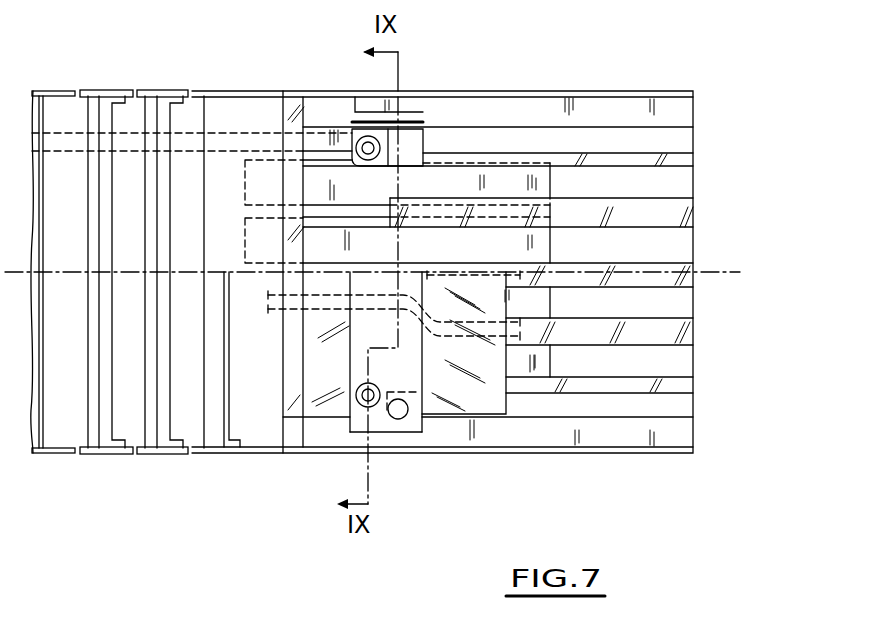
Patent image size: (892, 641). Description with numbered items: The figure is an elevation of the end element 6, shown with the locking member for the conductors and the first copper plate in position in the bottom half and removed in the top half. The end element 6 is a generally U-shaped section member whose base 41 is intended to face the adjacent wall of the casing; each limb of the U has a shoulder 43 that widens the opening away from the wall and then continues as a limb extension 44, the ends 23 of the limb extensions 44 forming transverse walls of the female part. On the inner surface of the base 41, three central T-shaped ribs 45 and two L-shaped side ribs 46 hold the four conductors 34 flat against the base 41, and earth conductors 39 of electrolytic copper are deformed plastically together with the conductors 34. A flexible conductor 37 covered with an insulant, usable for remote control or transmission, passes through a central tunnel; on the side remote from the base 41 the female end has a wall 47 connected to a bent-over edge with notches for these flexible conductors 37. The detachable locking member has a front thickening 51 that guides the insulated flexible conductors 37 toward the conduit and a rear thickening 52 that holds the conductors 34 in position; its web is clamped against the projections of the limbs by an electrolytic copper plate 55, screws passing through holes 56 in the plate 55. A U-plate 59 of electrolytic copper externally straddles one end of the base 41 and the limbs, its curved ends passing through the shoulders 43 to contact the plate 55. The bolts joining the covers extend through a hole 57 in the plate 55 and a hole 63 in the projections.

The end element 6 is at (515, 87).
The ends of the limb extensions 23 is at (200, 90).
The conductors 34 is at (530, 183).
The flexible conductor 37 is at (520, 330).
The earth conductor 39 is at (323, 138).
The base 41 is at (666, 184).
The shoulder 43 is at (682, 110).
The limb extensions 44 is at (650, 92).
The central T-shaped ribs 45 is at (683, 212).
The L-shaped side ribs 46 is at (683, 160).
The wall 47 is at (227, 183).
The front thickening 51 is at (470, 398).
The rear thickening 52 is at (320, 397).
The electrolytic copper plate 55 is at (410, 428).
The holes 56 is at (360, 403).
The hole 57 is at (398, 412).
The U-plate 59 is at (350, 128).
The hole 63 is at (403, 137).